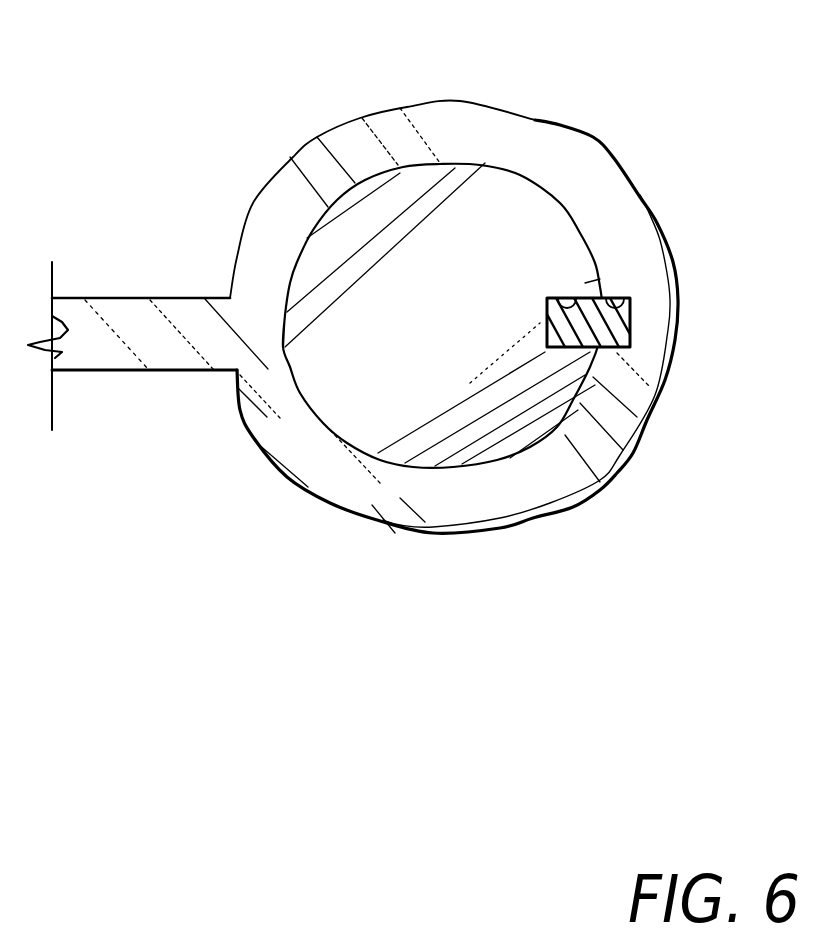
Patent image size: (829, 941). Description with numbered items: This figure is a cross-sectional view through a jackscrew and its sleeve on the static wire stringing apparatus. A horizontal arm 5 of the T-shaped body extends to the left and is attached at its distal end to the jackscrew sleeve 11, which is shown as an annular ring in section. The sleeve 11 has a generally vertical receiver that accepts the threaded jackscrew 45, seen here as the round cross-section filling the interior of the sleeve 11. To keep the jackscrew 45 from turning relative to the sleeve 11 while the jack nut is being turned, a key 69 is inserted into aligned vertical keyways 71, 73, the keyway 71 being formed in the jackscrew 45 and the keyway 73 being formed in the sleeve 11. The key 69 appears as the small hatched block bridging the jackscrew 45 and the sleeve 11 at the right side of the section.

The horizontal arm 5 is at (105, 297).
The jackscrew sleeve 11 is at (588, 133).
The jackscrew 45 is at (512, 166).
The key 69 is at (632, 312).
The keyway 71 is at (576, 298).
The keyway 73 is at (625, 297).